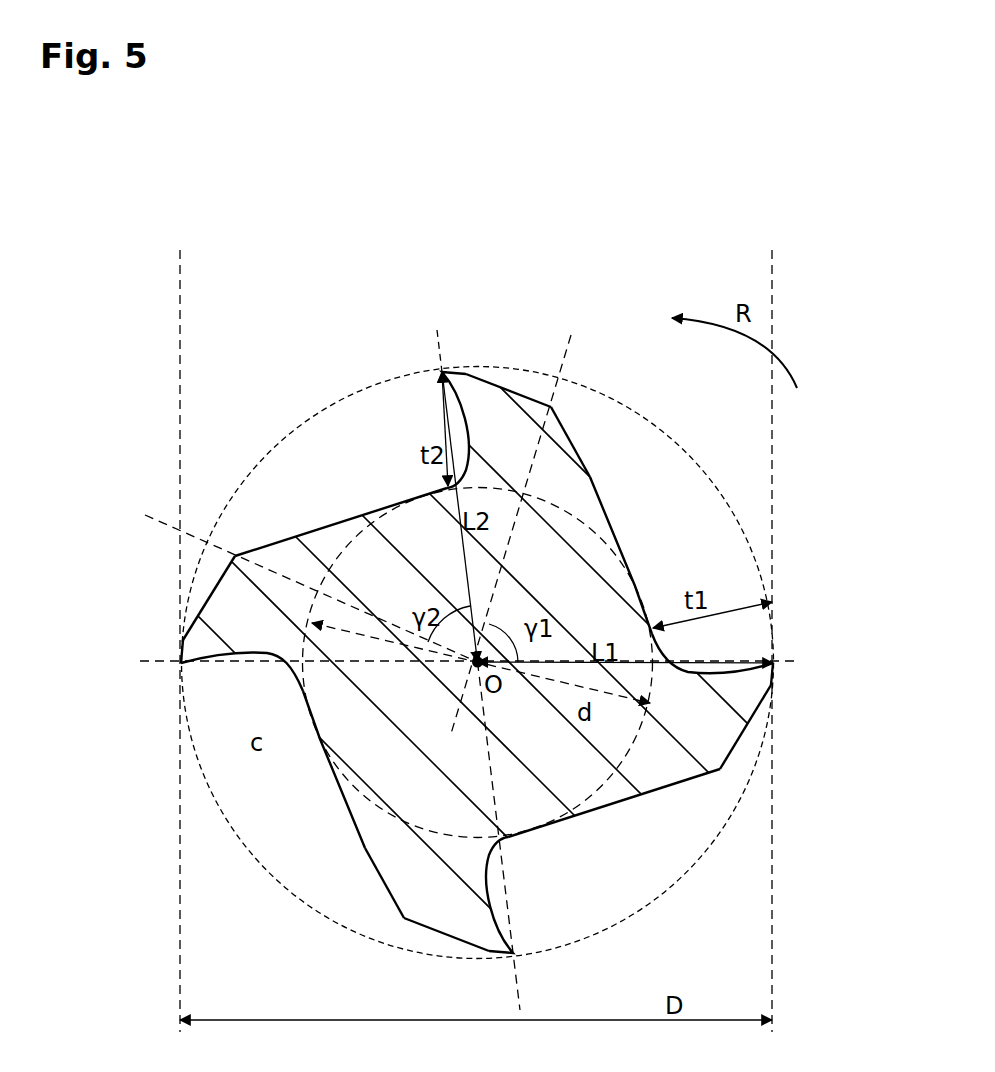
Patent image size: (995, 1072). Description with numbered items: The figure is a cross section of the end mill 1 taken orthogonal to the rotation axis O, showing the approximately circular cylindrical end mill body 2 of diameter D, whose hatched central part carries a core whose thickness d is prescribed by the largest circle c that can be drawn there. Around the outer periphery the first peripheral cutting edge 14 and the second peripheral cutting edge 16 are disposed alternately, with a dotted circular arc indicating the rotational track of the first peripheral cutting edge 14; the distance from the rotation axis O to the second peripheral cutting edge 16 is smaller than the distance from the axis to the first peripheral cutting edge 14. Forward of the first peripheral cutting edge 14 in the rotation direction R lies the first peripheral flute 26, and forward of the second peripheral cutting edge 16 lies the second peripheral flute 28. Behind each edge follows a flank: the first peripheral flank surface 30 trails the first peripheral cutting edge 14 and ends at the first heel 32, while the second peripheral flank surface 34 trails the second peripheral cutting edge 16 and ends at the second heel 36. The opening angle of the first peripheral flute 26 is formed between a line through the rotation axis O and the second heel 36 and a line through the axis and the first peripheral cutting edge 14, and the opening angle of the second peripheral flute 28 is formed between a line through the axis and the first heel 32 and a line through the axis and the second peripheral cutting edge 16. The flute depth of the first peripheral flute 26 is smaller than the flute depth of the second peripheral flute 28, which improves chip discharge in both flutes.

The end mill 1 is at (243, 360).
The end mill body 2 is at (810, 495).
The first peripheral cutting edge 14 is at (776, 658).
The second peripheral cutting edge 16 is at (437, 362).
The first peripheral flute 26 is at (700, 488).
The second peripheral flute 28 is at (352, 410).
The first peripheral flank surface 30 is at (183, 642).
The first heel 32 is at (235, 556).
The second peripheral flank surface 34 is at (448, 370).
The second heel 36 is at (553, 407).